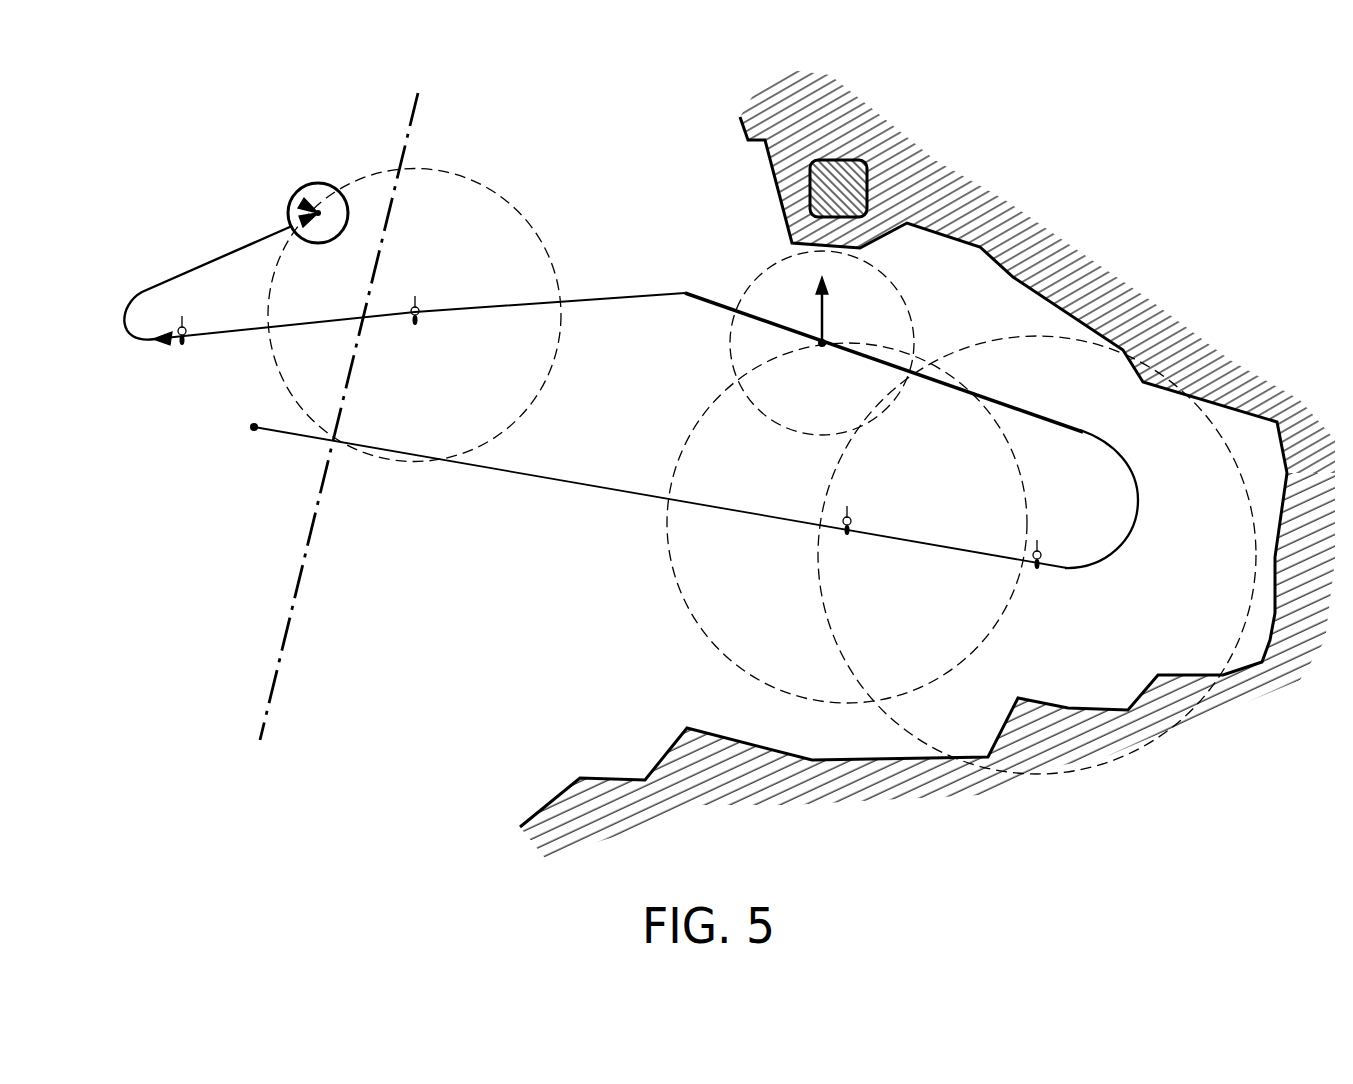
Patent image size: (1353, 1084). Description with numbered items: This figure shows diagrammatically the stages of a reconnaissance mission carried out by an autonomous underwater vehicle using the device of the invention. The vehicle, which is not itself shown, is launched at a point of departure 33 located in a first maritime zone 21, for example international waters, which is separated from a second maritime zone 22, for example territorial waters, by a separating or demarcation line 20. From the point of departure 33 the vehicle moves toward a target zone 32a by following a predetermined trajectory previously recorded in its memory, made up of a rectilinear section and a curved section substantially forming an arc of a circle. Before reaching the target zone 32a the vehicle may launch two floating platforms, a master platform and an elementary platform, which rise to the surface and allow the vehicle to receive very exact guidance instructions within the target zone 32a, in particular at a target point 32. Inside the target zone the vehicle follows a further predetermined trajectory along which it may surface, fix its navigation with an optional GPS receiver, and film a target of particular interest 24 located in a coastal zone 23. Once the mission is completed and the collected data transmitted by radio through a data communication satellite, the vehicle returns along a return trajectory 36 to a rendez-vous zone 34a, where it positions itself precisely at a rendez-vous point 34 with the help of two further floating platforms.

The demarcation line 20 is at (290, 624).
The maritime zone 21 is at (206, 549).
The second maritime zone 22 is at (504, 582).
The coastal zone 23 is at (1005, 270).
The target of particular interest 24 is at (864, 158).
The target point 32 is at (830, 333).
The target zone 32a is at (786, 262).
The point of departure 33 is at (248, 434).
The rendez-vous point 34 is at (306, 200).
The rendez-vous zone 34a is at (322, 183).
The return trajectory 36 is at (603, 300).